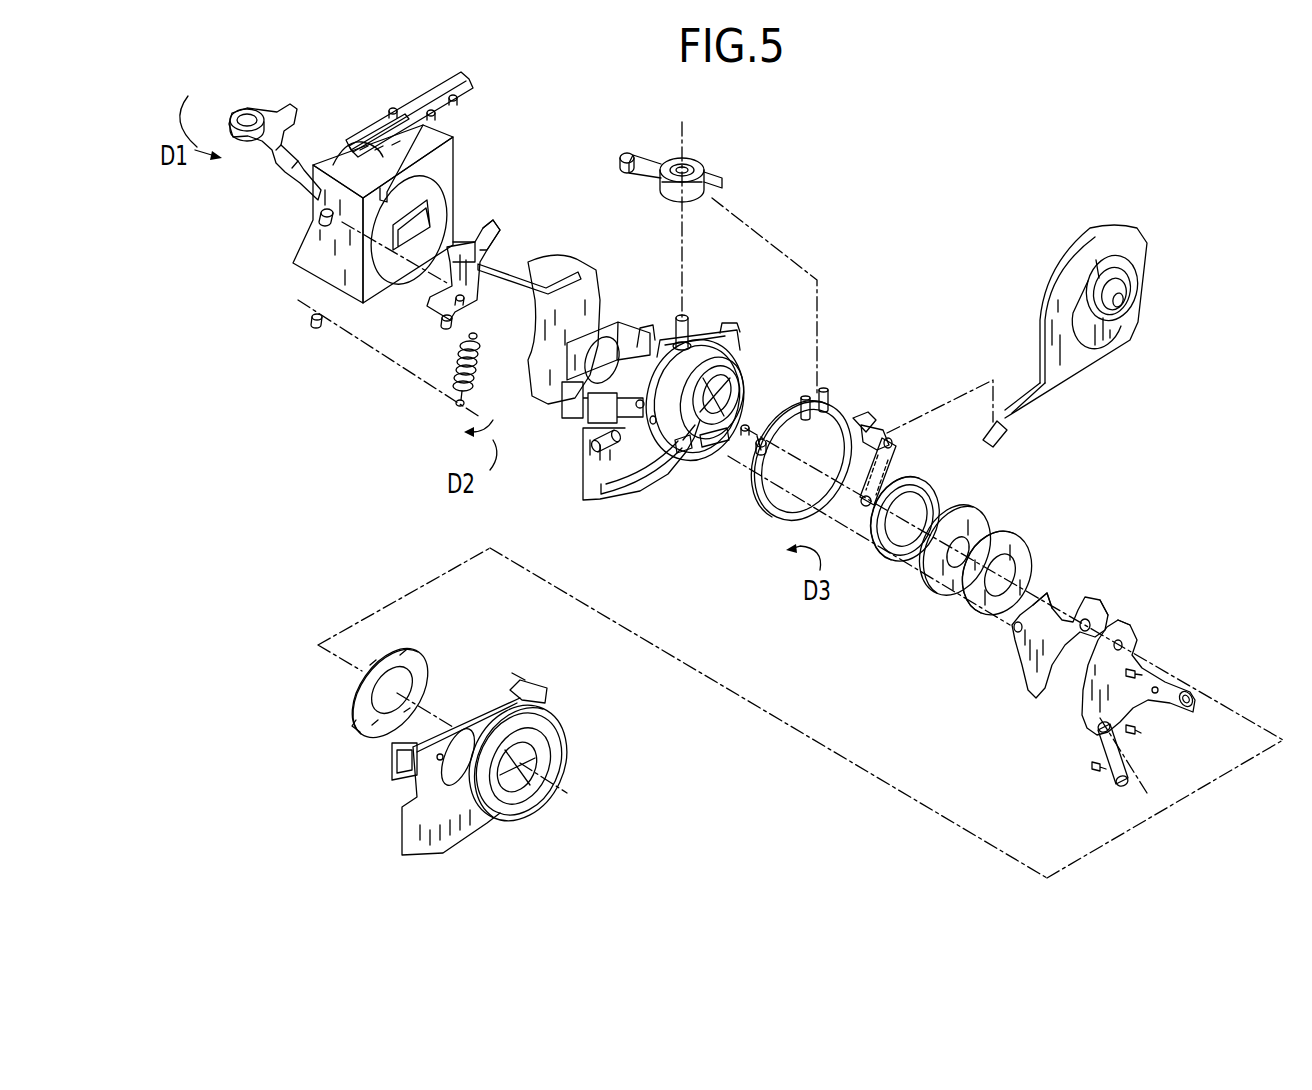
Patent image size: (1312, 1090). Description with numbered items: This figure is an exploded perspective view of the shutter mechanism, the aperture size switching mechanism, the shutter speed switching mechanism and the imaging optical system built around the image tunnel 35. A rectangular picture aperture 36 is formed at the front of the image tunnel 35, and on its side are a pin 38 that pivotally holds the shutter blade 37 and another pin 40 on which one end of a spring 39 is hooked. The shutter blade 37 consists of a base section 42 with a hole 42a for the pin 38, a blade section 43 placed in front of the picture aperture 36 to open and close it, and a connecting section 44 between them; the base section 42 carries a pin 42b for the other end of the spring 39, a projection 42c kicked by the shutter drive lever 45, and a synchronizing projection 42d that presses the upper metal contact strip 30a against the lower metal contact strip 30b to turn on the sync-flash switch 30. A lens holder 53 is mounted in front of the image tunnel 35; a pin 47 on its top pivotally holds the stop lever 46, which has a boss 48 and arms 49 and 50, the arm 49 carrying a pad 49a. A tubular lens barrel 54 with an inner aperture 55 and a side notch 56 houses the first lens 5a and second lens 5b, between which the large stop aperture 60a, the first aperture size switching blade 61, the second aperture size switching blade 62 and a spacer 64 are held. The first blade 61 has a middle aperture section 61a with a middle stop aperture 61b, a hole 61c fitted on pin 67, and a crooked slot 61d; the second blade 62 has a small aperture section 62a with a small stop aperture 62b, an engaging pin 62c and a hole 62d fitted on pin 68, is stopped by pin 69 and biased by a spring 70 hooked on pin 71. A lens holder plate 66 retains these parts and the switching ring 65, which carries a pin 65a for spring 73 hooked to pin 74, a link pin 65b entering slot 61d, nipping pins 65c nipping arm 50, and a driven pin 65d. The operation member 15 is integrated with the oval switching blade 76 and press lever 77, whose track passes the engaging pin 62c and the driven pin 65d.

The first lens 5a is at (426, 673).
The second lens 5b is at (887, 556).
The operation member 15 is at (1117, 330).
The sync-flash switch 30 is at (435, 118).
The upper metal contact strip 30a is at (387, 122).
The lower metal contact strip 30b is at (338, 154).
The image tunnel 35 is at (364, 220).
The picture aperture 36 is at (430, 215).
The shutter blade 37 is at (547, 376).
The pin 38 is at (318, 223).
The spring 39 is at (455, 375).
The pin 40 is at (311, 324).
The base section 42 is at (479, 264).
The hole 42a is at (470, 302).
The pin 42b is at (438, 324).
The projection 42c is at (458, 245).
The synchronizing projection 42d is at (482, 227).
The blade section 43 is at (597, 308).
The connecting section 44 is at (530, 275).
The shutter drive lever 45 is at (240, 142).
The stop lever 46 is at (699, 166).
The pin 47 is at (684, 318).
The boss 48 is at (675, 190).
The arm 49 is at (638, 135).
The pad 49a is at (627, 152).
The arm 50 is at (722, 183).
The lens holder 53 is at (635, 491).
The lens barrel 54 is at (748, 348).
The aperture 55 is at (717, 360).
The notch 56 is at (683, 440).
The large stop aperture 60a is at (972, 510).
The first aperture size switching blade 61 is at (1051, 647).
The middle aperture section 61a is at (1097, 605).
The middle stop aperture 61b is at (1104, 611).
The hole 61c is at (1013, 634).
The crooked slot 61d is at (1033, 655).
The second aperture size switching blade 62 is at (1158, 679).
The small aperture section 62a is at (1131, 627).
The small stop aperture 62b is at (1131, 645).
The engaging pin 62c is at (1195, 695).
The hole 62d is at (1156, 694).
The spacer 64 is at (1023, 538).
The switching ring 65 is at (826, 464).
The pin 65a is at (877, 433).
The link pin 65b is at (757, 438).
The nipping pins 65c is at (827, 389).
The driven pin 65d is at (860, 418).
The lens holder plate 66 is at (531, 693).
The pin 67 is at (593, 433).
The pin 68 is at (1143, 673).
The pin 69 is at (1134, 736).
The spring 70 is at (1114, 776).
The pin 71 is at (1090, 767).
The spring 73 is at (888, 467).
The pin 74 is at (746, 425).
The switching blade 76 is at (1087, 305).
The press lever 77 is at (1008, 430).